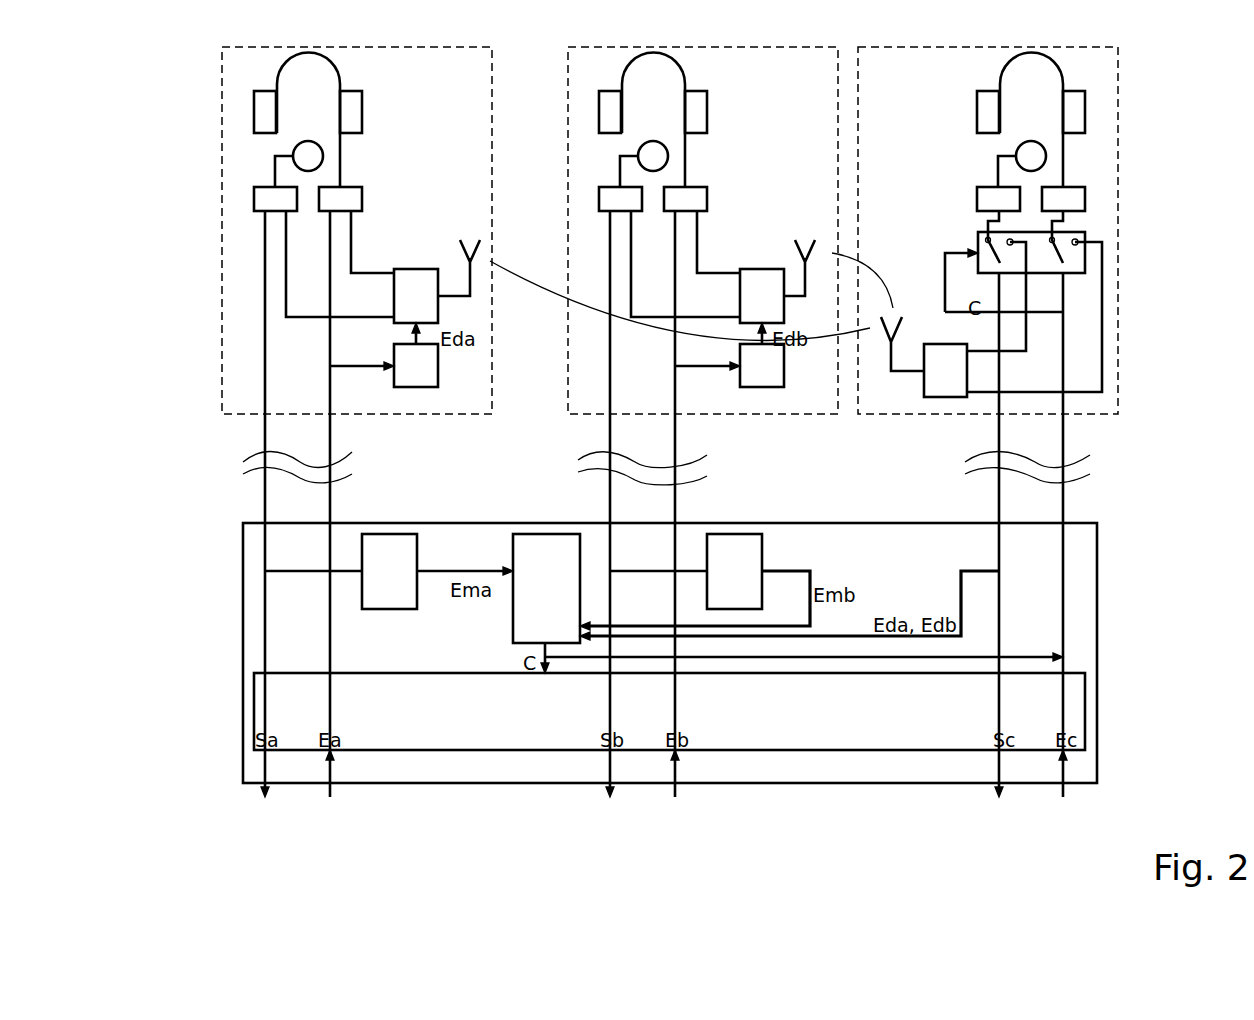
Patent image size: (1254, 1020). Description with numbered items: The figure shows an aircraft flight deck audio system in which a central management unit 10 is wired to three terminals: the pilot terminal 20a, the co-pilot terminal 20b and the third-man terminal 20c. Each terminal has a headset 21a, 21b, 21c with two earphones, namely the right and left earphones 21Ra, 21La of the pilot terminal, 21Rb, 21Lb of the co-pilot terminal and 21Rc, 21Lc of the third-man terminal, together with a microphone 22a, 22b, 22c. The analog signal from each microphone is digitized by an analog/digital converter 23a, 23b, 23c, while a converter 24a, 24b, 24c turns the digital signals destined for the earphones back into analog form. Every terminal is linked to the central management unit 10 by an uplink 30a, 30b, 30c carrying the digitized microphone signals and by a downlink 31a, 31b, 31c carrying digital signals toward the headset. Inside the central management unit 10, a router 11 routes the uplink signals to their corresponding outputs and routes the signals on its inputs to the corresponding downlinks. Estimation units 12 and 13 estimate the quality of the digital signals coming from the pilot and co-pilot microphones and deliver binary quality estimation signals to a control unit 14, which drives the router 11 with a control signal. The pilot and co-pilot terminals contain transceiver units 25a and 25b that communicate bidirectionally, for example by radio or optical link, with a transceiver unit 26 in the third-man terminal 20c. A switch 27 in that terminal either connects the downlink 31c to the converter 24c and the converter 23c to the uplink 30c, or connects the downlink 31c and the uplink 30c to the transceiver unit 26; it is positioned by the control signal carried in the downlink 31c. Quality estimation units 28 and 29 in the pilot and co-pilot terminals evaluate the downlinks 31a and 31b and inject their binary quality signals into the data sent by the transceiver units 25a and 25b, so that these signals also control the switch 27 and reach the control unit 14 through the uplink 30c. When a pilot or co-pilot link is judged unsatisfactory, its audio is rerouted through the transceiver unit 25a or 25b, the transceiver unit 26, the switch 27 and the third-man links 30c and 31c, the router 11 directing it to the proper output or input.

The central management unit 10 is at (1097, 618).
The router 11 is at (1085, 725).
The estimation unit 12 is at (419, 569).
The estimation unit 13 is at (764, 568).
The control unit 14 is at (583, 556).
The pilot terminal 20a is at (222, 270).
The co-pilot terminal 20b is at (568, 270).
The third-man terminal 20c is at (1118, 297).
The first loop 21a is at (340, 84).
The second loop 21b is at (685, 84).
The third loop 21c is at (1063, 84).
The earphone 21Ra is at (254, 121).
The earphone 21La is at (362, 128).
The earphone 21Rb is at (599, 121).
The earphone 21Lb is at (707, 128).
The right arm of third loop 21Rc is at (977, 121).
The left arm of third loop 21Lc is at (1085, 128).
The microphone 22a is at (323, 150).
The microphone 22b is at (668, 150).
The third sensing element 22c is at (1046, 150).
The analog/digital converter 23a is at (254, 196).
The analog/digital converter 23b is at (599, 196).
The analog/digital converter 23c is at (977, 196).
The second terminal of first unit 24a is at (362, 203).
The converter 24b is at (707, 203).
The converter 24c is at (1085, 203).
The transceiver unit 25a is at (400, 269).
The transceiver unit 25b is at (746, 269).
The transceiver unit 26 is at (930, 402).
The switch 27 is at (1085, 235).
The quality estimation unit 28 is at (438, 355).
The quality estimation unit 29 is at (784, 355).
The uplink 30a is at (265, 443).
The uplink 30b is at (610, 443).
The uplink 30c is at (999, 443).
The downlink 31a is at (347, 430).
The downlink 31b is at (692, 430).
The downlink 31c is at (1078, 430).